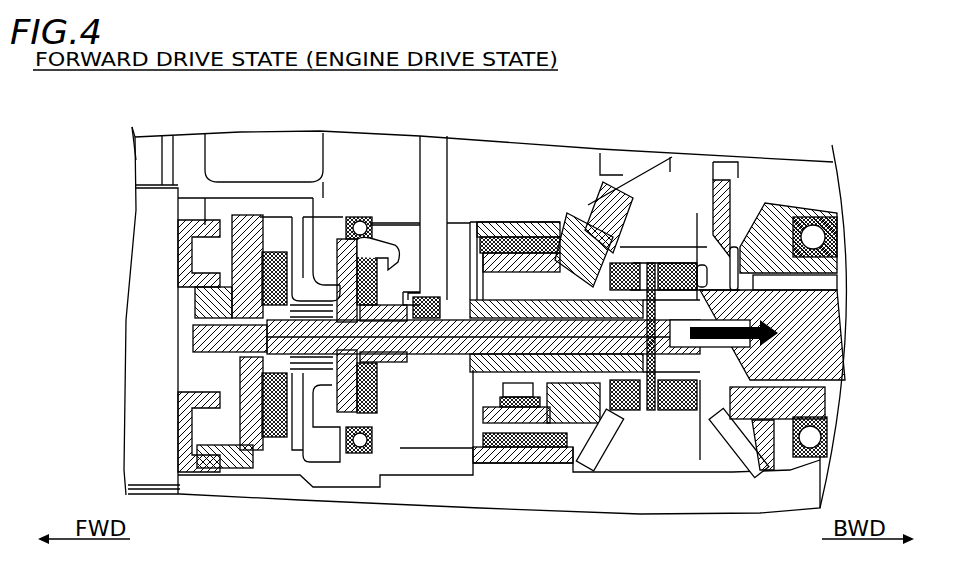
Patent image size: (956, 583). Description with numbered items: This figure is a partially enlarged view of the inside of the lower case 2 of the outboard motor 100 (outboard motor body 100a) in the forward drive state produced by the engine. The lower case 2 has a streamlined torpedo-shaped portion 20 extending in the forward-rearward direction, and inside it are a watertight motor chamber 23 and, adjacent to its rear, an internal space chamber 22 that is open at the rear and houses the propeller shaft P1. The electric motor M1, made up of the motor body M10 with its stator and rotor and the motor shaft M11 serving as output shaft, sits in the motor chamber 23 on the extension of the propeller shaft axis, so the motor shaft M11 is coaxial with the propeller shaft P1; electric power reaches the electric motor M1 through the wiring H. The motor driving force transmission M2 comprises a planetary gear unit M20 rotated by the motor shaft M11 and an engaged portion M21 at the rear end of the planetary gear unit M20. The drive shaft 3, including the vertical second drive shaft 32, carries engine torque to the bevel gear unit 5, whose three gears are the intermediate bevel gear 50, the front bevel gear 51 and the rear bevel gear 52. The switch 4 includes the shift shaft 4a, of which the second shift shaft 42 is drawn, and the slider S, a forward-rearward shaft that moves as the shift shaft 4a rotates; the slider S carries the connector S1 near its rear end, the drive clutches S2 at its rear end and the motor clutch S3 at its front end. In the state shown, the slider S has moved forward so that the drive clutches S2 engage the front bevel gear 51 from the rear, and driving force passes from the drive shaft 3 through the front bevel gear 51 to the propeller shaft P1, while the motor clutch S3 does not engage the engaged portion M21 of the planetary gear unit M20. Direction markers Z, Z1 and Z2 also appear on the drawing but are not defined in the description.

The outboard motor 100 is at (858, 122).
The outboard motor body 100a is at (852, 178).
The lower case 2 is at (852, 208).
The wiring H is at (143, 168).
The second shift shaft 42 is at (430, 147).
The switch 4 is at (433, 133).
The shift shaft 4a is at (443, 135).
The front bevel gear 51 is at (577, 205).
The second drive shaft 32 is at (692, 167).
The drive shaft 3 is at (710, 158).
The bevel gear unit 5 is at (730, 168).
The intermediate bevel gear 50 is at (750, 163).
The rear bevel gear 52 is at (768, 202).
The propeller shaft P1 is at (830, 322).
The first axial direction Z1 is at (880, 397).
The second axial direction Z2 is at (880, 447).
The axial direction Z is at (899, 397).
The slider S is at (688, 415).
The connector S1 is at (657, 410).
The drive clutches S2 is at (620, 410).
The motor clutch S3 is at (385, 394).
The electric motor M1 is at (68, 311).
The motor shaft M11 is at (185, 327).
The motor body M10 is at (147, 350).
The motor driving force transmission M2 is at (386, 537).
The planetary gear unit M20 is at (300, 458).
The engaged portion M21 is at (396, 448).
The motor chamber 23 is at (160, 483).
The torpedo-shaped portion 20 is at (212, 488).
The internal space chamber 22 is at (727, 472).